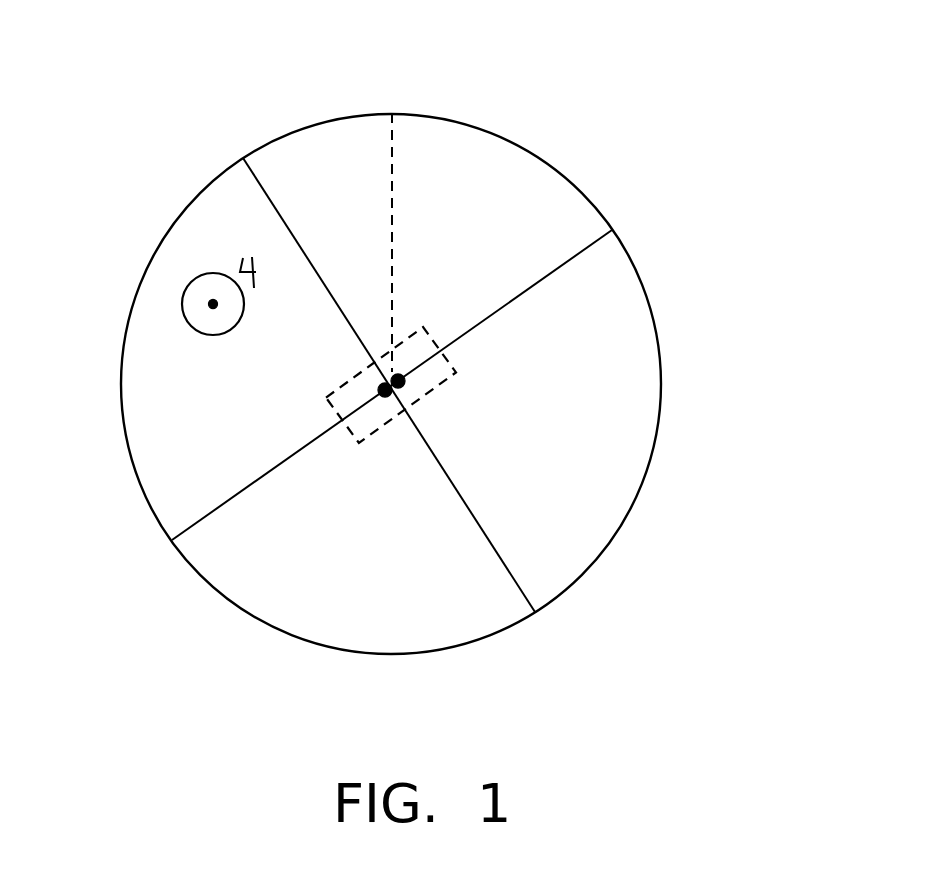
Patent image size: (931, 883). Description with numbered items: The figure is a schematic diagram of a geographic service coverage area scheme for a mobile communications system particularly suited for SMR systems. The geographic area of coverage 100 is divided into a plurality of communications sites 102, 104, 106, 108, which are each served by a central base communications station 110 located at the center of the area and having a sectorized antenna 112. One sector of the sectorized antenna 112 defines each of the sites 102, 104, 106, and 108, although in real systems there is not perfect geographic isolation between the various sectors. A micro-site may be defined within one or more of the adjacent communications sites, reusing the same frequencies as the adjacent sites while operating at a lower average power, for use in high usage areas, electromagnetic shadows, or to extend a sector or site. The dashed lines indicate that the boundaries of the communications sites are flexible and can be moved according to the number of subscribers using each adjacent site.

The geographic area of coverage 100 is at (579, 35).
The communications site 102 is at (327, 640).
The communications site 104 is at (637, 393).
The communications site 106 is at (543, 207).
The communications site 108 is at (230, 185).
The central base communications station 110 is at (600, 372).
The sectorized antenna 112 is at (395, 390).